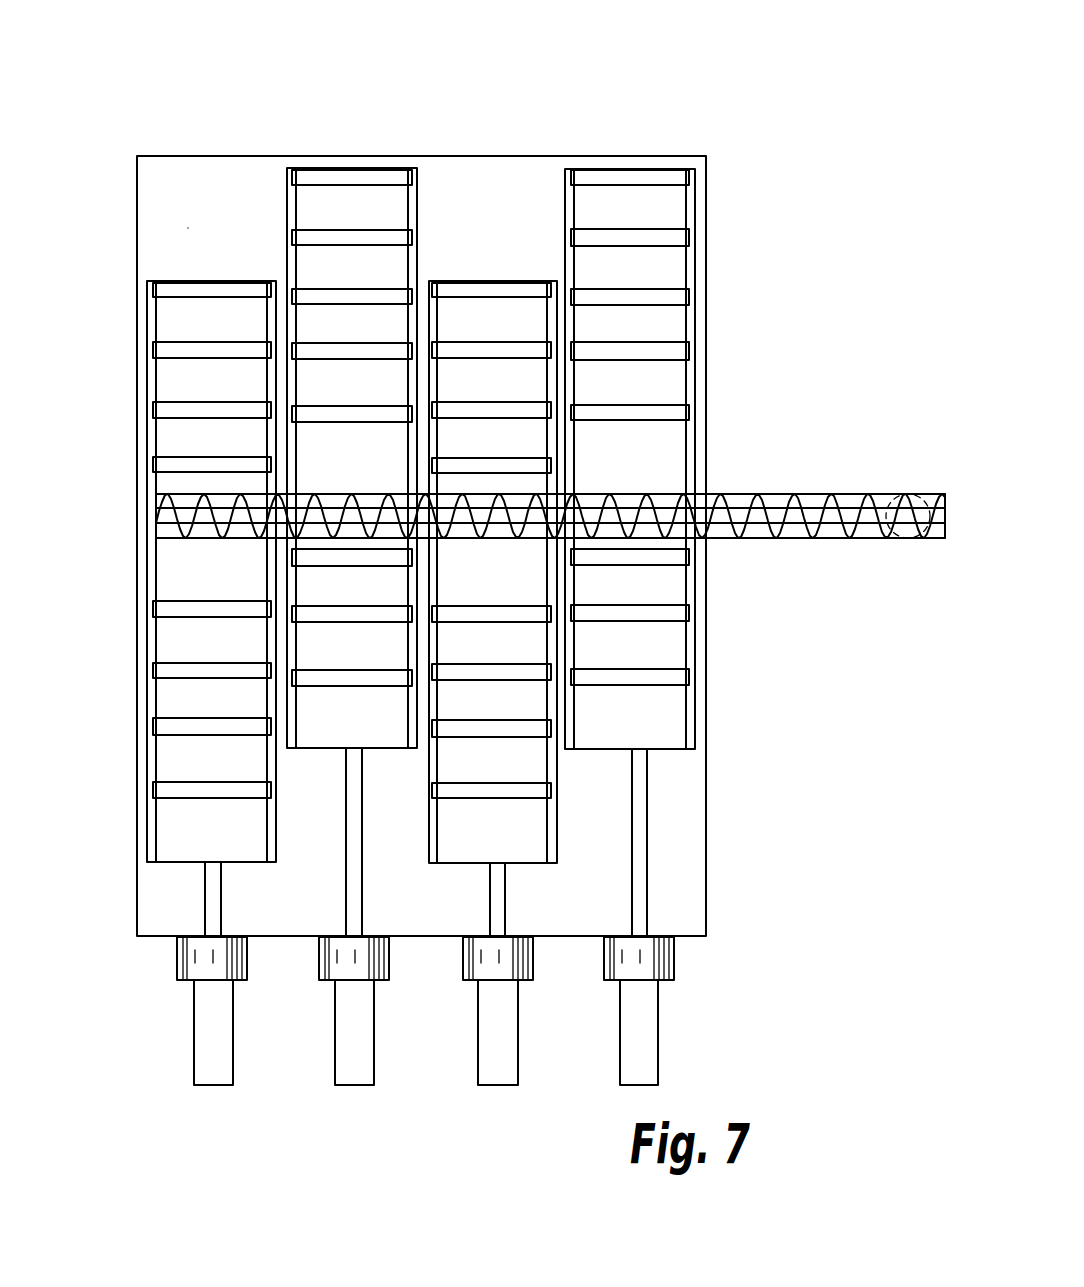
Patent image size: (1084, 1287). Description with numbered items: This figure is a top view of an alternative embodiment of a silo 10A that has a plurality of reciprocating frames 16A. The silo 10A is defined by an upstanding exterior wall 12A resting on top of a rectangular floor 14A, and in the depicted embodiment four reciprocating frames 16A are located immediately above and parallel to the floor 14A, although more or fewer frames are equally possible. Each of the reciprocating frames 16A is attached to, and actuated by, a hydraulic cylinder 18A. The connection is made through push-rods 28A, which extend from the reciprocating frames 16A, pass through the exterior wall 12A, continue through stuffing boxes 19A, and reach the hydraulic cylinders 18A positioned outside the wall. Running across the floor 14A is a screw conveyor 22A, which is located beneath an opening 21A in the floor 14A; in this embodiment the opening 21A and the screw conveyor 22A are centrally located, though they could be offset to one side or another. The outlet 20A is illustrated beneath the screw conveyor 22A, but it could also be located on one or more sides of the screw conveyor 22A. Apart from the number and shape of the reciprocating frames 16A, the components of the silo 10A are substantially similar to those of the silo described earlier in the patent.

The silo 10A is at (150, 122).
The exterior wall 12A is at (672, 152).
The floor 14A is at (188, 228).
The reciprocating frames 16A is at (150, 848).
The hydraulic cylinders 18A is at (223, 1027).
The stuffing boxes 19A is at (230, 948).
The outlet 20A is at (917, 500).
The opening 21A is at (735, 493).
The screw conveyor 22A is at (787, 513).
The push-rods 28A is at (218, 878).